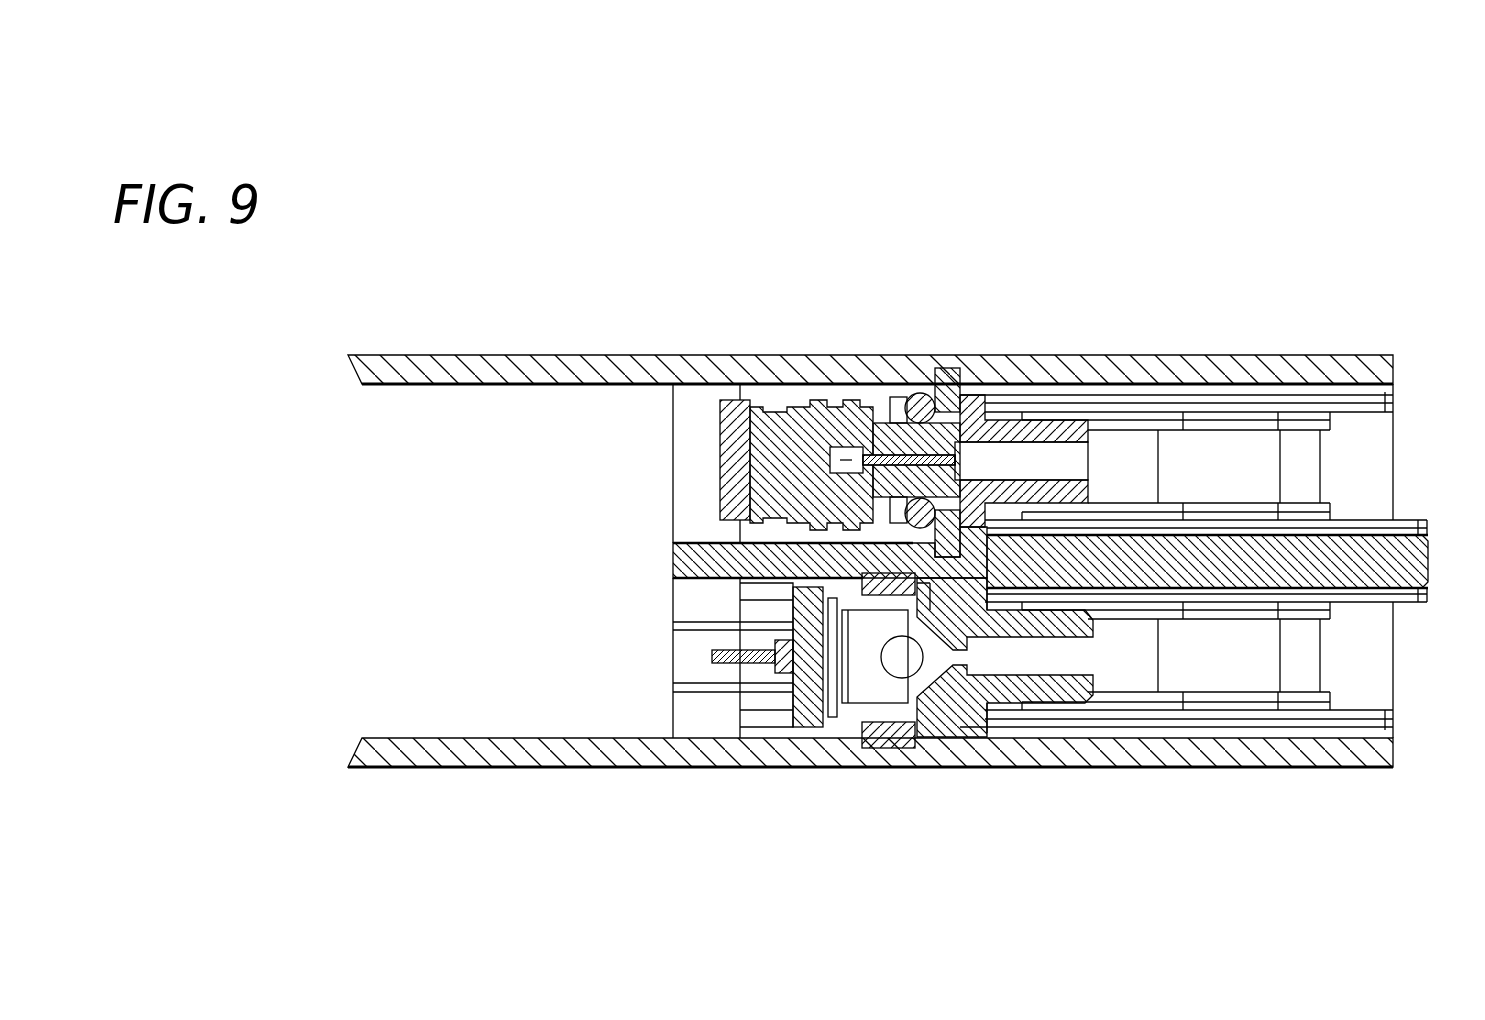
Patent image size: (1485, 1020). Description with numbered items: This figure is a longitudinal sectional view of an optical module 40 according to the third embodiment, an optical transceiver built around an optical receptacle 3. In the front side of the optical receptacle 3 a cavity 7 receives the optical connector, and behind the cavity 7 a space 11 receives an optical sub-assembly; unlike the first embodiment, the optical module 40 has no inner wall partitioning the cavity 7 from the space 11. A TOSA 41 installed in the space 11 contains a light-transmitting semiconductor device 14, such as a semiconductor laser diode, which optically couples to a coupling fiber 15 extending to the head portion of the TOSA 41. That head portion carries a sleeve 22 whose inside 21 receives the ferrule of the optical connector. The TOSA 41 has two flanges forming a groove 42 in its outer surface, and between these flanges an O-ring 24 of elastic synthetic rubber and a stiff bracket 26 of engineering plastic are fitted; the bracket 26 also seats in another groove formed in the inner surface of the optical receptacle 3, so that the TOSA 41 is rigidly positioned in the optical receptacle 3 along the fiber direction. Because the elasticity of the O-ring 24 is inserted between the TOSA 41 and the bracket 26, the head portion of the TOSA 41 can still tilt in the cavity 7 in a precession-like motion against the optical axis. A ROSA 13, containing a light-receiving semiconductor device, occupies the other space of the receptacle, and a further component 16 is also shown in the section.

The optical module 40 is at (576, 156).
The optical receptacle 3 is at (1087, 383).
The TOSA 41 is at (800, 407).
The space 11 is at (745, 400).
The light-transmitting semiconductor device 14 is at (853, 447).
The coupling fiber 15 is at (893, 450).
The O-ring 24 is at (918, 388).
The bracket 26 is at (948, 368).
The groove 42 is at (1013, 462).
The sleeve 22 is at (1047, 423).
The cavity 7 is at (1368, 455).
The inside of the sleeve 21 is at (957, 503).
The ROSA 13 is at (962, 695).
The valve ball holder 16 is at (863, 672).